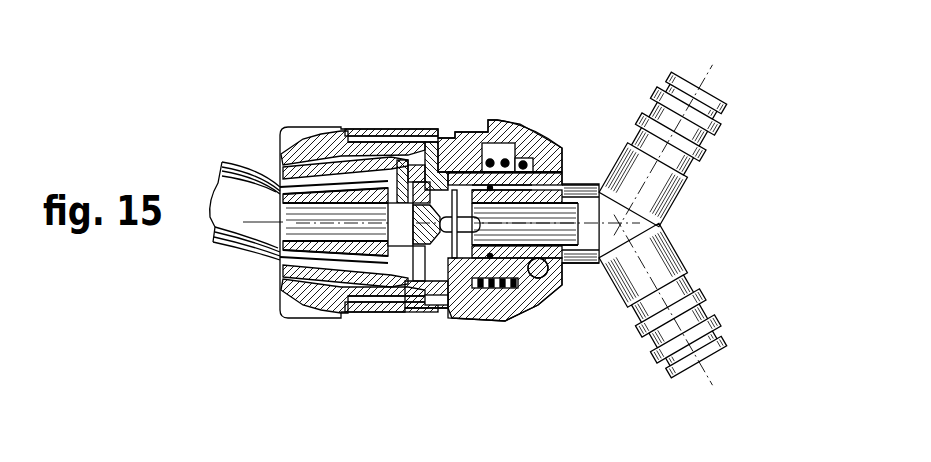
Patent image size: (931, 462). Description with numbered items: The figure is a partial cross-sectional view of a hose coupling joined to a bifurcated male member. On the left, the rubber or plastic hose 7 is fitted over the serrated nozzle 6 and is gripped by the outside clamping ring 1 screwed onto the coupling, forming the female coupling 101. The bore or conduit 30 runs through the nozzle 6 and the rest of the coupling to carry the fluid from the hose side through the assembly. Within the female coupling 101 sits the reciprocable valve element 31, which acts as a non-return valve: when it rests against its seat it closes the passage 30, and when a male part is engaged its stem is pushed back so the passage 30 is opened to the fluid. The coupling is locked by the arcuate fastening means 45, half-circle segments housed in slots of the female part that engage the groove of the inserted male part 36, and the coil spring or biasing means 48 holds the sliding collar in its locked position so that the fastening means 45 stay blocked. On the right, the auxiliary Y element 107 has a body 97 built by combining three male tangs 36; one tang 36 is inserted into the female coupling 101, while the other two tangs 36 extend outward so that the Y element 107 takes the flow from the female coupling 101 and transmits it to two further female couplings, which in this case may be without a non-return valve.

The outside clamping ring 1 is at (310, 310).
The nozzle 6 is at (313, 250).
The hose 7 is at (237, 243).
The bore or conduit 30 is at (268, 210).
The valve element 31 is at (436, 232).
The male part 36 is at (540, 187).
The fastening means 45 is at (537, 280).
The biasing means 48 is at (505, 292).
The body 97 is at (605, 268).
The female coupling 101 is at (382, 338).
The auxiliary Y element 107 is at (705, 235).